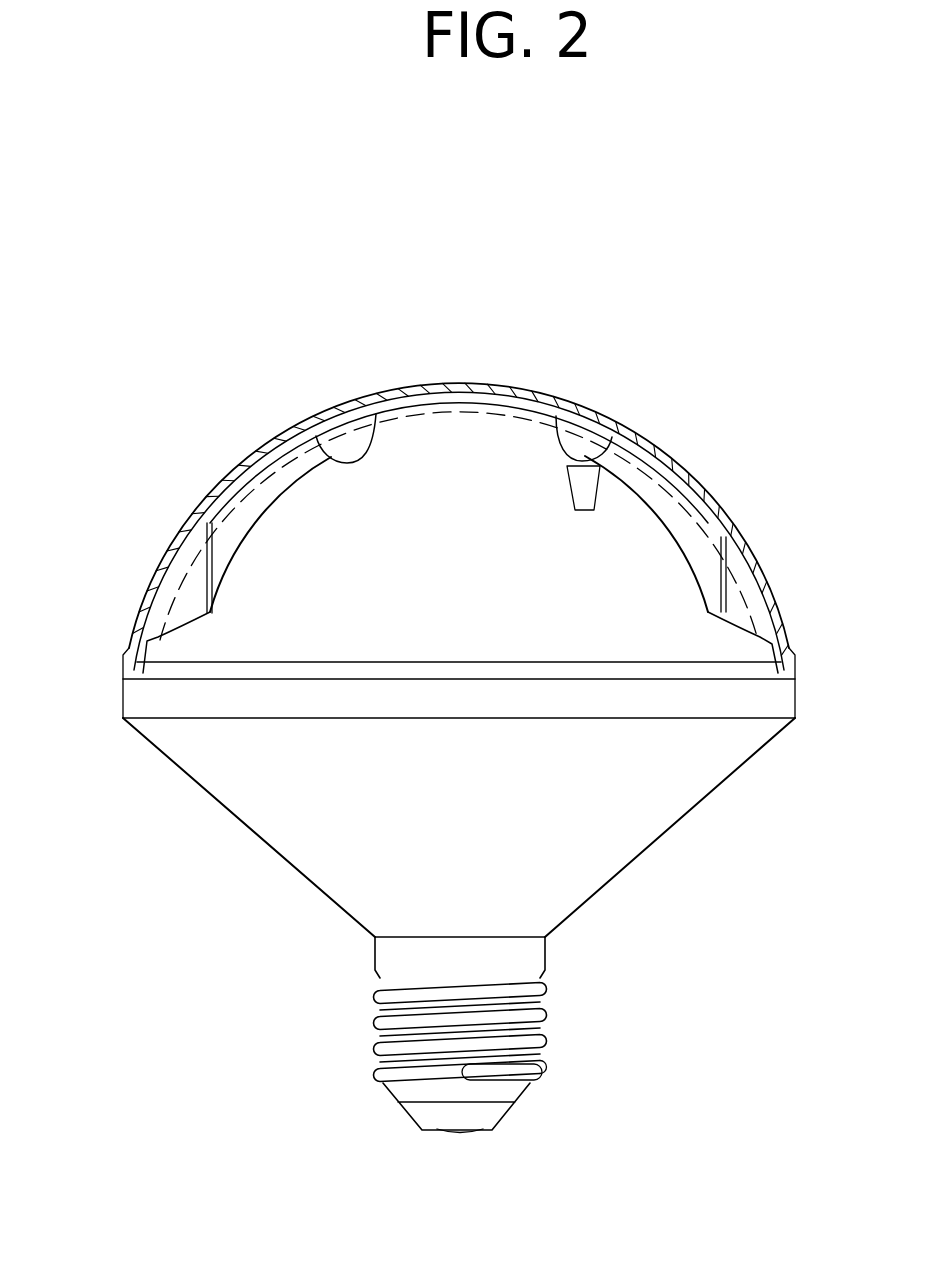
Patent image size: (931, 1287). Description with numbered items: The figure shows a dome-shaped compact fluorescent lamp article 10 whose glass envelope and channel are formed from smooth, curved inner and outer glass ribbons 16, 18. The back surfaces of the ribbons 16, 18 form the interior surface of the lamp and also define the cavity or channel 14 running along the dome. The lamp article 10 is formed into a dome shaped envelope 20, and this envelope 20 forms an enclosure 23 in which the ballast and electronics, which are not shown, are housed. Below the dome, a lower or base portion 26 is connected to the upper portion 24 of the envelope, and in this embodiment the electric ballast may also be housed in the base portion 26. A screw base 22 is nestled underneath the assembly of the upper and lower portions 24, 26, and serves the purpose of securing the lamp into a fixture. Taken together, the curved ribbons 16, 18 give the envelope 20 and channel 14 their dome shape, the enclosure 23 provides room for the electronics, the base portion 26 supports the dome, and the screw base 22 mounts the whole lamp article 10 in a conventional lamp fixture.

The compact fluorescent lamp article 10 is at (218, 426).
The channel 14 is at (347, 423).
The glass ribbon 16 is at (225, 573).
The glass ribbon 18 is at (176, 543).
The dome shaped envelope 20 is at (503, 385).
The screw base 22 is at (545, 1046).
The enclosure 23 is at (487, 569).
The upper portion 24 is at (735, 536).
The base portion 26 is at (715, 788).